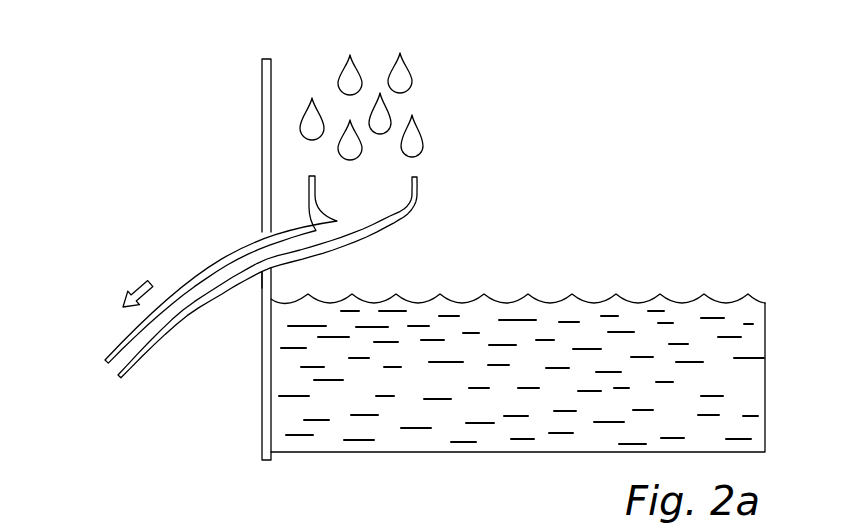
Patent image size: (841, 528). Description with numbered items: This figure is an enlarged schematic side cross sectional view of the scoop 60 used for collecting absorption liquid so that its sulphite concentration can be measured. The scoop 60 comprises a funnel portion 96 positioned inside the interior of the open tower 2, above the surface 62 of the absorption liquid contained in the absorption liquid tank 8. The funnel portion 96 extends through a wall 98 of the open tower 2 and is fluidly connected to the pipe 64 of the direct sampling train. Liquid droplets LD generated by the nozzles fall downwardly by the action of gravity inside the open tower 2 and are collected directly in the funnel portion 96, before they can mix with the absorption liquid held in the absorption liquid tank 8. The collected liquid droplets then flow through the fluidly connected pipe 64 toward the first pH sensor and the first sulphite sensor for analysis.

The open tower 2 is at (262, 106).
The absorption liquid tank 8 is at (262, 400).
The surface of absorption liquid 62 is at (585, 300).
The liquid droplets LD is at (345, 76).
The scoop 60 is at (244, 199).
The funnel portion 96 is at (418, 203).
The wall 98 is at (262, 287).
The pipe 64 is at (116, 348).